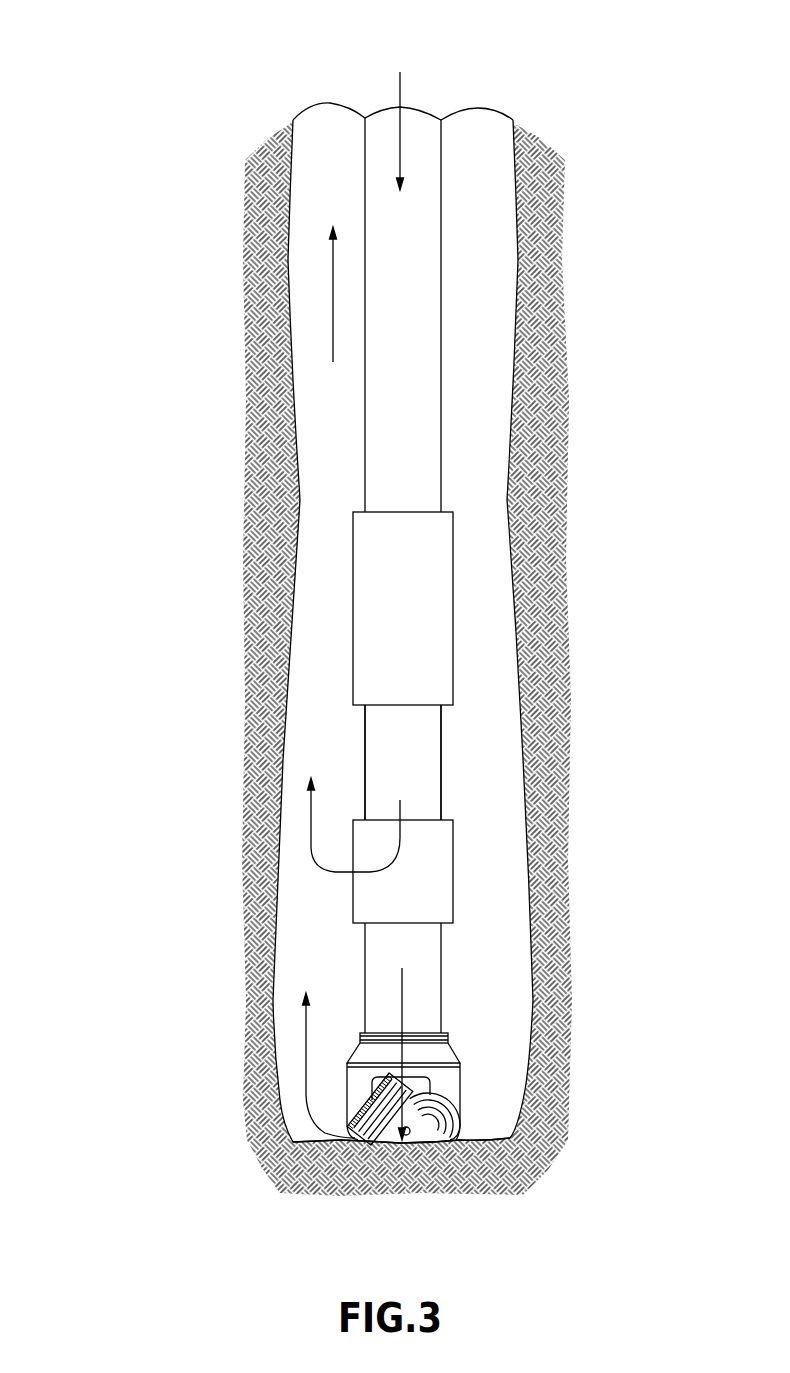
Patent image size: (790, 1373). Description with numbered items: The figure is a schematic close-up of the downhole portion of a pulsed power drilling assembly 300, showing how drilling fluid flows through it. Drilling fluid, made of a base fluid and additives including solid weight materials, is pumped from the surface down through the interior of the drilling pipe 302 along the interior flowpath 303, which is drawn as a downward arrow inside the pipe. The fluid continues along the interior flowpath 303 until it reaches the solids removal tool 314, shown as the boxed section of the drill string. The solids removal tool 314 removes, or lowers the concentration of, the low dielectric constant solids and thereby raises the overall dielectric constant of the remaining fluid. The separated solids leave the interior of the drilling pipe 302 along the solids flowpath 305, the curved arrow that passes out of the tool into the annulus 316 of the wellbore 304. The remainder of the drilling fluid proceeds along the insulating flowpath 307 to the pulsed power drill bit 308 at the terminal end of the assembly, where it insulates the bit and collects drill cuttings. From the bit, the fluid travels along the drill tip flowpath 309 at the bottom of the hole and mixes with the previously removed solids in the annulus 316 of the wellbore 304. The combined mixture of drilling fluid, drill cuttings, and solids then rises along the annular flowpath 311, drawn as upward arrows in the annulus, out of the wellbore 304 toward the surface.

The drilling assembly 300 is at (163, 70).
The drilling pipe 302 is at (448, 296).
The interior flowpath 303 is at (400, 90).
The wellbore 304 is at (302, 196).
The solids flowpath 305 is at (308, 845).
The insulating flowpath 307 is at (402, 980).
The pulsed power drill bit 308 is at (468, 1075).
The drill tip flowpath 309 is at (300, 1135).
The annular flowpath 311 is at (333, 293).
The solids removal tool 314 is at (463, 840).
The annulus 316 is at (365, 733).